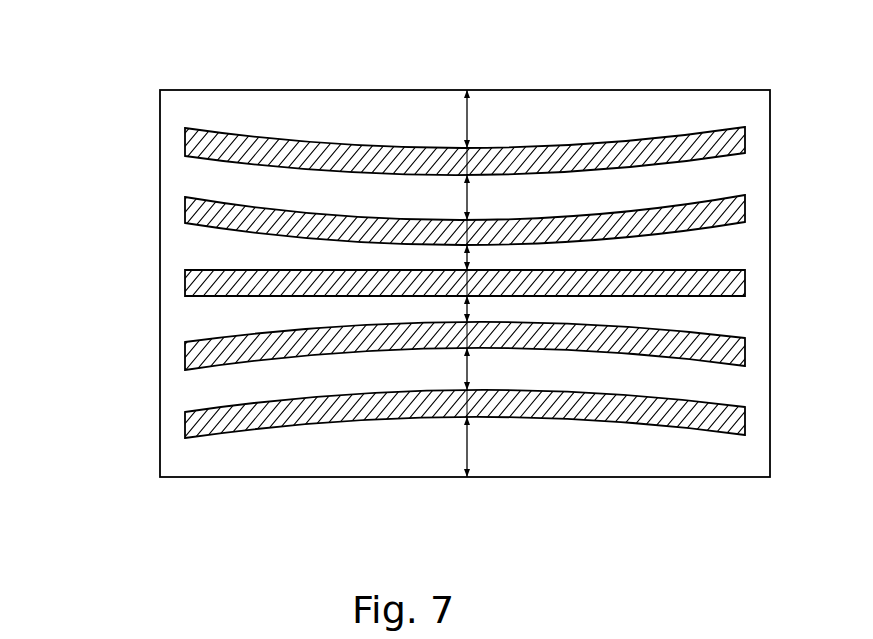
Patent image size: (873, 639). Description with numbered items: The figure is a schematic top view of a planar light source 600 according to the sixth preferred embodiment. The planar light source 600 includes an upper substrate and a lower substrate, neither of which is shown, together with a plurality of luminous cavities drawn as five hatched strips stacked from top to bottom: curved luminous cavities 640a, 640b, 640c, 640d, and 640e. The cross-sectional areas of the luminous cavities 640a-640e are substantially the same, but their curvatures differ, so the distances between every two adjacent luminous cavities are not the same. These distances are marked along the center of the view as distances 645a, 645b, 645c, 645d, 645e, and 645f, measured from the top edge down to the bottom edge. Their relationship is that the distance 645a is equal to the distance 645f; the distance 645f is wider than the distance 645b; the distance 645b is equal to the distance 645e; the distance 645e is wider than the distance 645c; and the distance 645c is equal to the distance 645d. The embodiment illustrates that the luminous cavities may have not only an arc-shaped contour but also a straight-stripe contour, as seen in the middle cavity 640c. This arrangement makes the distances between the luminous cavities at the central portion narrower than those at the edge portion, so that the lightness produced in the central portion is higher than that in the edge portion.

The planar light source 600 is at (121, 73).
The curved luminous cavity 640a is at (237, 147).
The curved luminous cavity 640b is at (315, 227).
The luminous cavity 640c is at (413, 280).
The curved luminous cavity 640d is at (313, 340).
The curved luminous cavity 640e is at (237, 420).
The distance 645a is at (470, 120).
The distance 645b is at (470, 198).
The distance 645c is at (470, 260).
The distance 645d is at (470, 308).
The distance 645e is at (470, 368).
The distance 645f is at (470, 443).